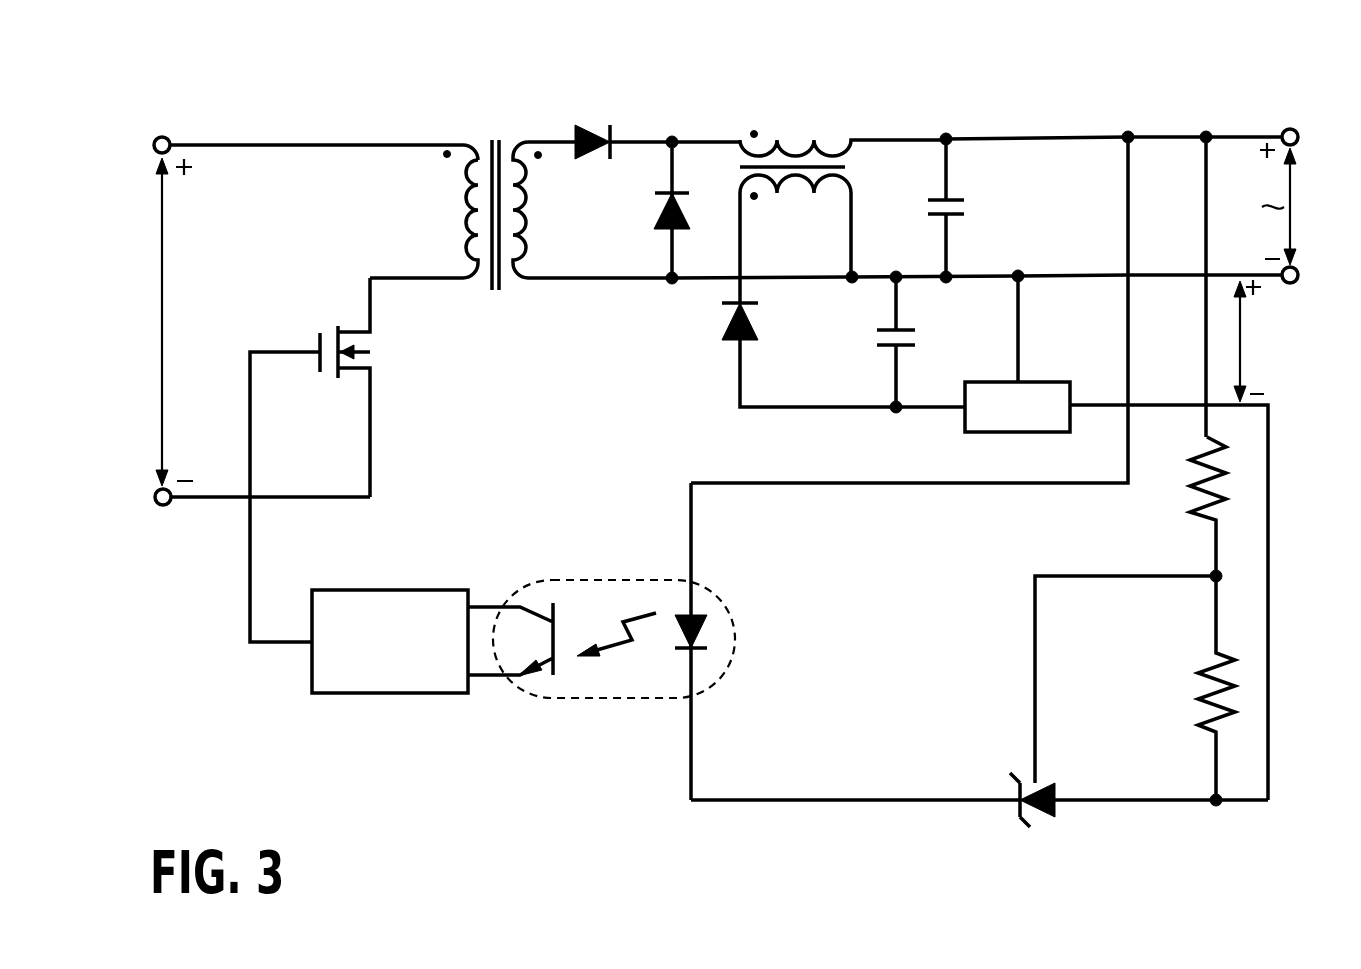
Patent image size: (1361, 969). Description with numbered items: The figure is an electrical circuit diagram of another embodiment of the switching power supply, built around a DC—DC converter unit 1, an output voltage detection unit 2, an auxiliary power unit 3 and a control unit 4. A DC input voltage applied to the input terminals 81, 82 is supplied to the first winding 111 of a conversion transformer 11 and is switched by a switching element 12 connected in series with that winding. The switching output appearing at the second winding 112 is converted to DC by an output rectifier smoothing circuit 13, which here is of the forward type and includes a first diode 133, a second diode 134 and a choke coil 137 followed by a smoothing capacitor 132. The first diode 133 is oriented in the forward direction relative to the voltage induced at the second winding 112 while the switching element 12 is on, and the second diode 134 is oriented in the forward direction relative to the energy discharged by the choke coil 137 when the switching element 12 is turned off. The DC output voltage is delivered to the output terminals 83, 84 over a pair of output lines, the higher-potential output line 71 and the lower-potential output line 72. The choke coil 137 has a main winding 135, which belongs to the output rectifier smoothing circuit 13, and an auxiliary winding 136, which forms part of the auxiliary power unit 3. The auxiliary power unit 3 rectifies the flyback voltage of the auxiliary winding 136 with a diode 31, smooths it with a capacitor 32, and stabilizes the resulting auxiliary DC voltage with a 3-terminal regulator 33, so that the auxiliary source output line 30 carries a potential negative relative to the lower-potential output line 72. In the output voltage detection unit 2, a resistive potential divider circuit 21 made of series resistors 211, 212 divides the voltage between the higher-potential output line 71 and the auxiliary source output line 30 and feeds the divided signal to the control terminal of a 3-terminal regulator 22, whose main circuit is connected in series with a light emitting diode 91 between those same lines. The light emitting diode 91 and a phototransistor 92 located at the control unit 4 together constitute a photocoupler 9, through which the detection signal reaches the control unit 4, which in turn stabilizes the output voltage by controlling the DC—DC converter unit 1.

The DC—DC converter unit 1 is at (595, 421).
The output voltage detection unit 2 is at (898, 697).
The auxiliary power unit 3 is at (973, 353).
The control unit 4 is at (392, 695).
The photocoupler 9 is at (613, 699).
The conversion transformer 11 is at (518, 115).
The switching element 12 is at (332, 329).
The output rectifier smoothing circuit 13 is at (727, 117).
The resistive potential divider circuit 21 is at (1258, 530).
The 3-terminal regulator 22 is at (1052, 822).
The auxiliary source output line 30 is at (1270, 607).
The diode 31 is at (726, 325).
The capacitor 32 is at (876, 336).
The 3-terminal regulator 33 is at (1050, 382).
The higher-potential output line 71 is at (1172, 134).
The lower-potential output line 72 is at (1167, 274).
The input terminal 81 is at (162, 136).
The input terminal 82 is at (163, 505).
The output terminal 83 is at (1292, 129).
The output terminal 84 is at (1296, 283).
The light emitting diode 91 is at (708, 617).
The phototransistor 92 is at (528, 610).
The first winding 111 is at (456, 204).
The second winding 112 is at (522, 246).
The smoothing capacitor 132 is at (966, 206).
The first diode 133 is at (594, 130).
The second diode 134 is at (655, 202).
The main winding 135 is at (801, 134).
The auxiliary winding 136 is at (795, 196).
The choke coil 137 is at (854, 164).
The resistor 211 is at (1201, 515).
The resistor 212 is at (1197, 690).